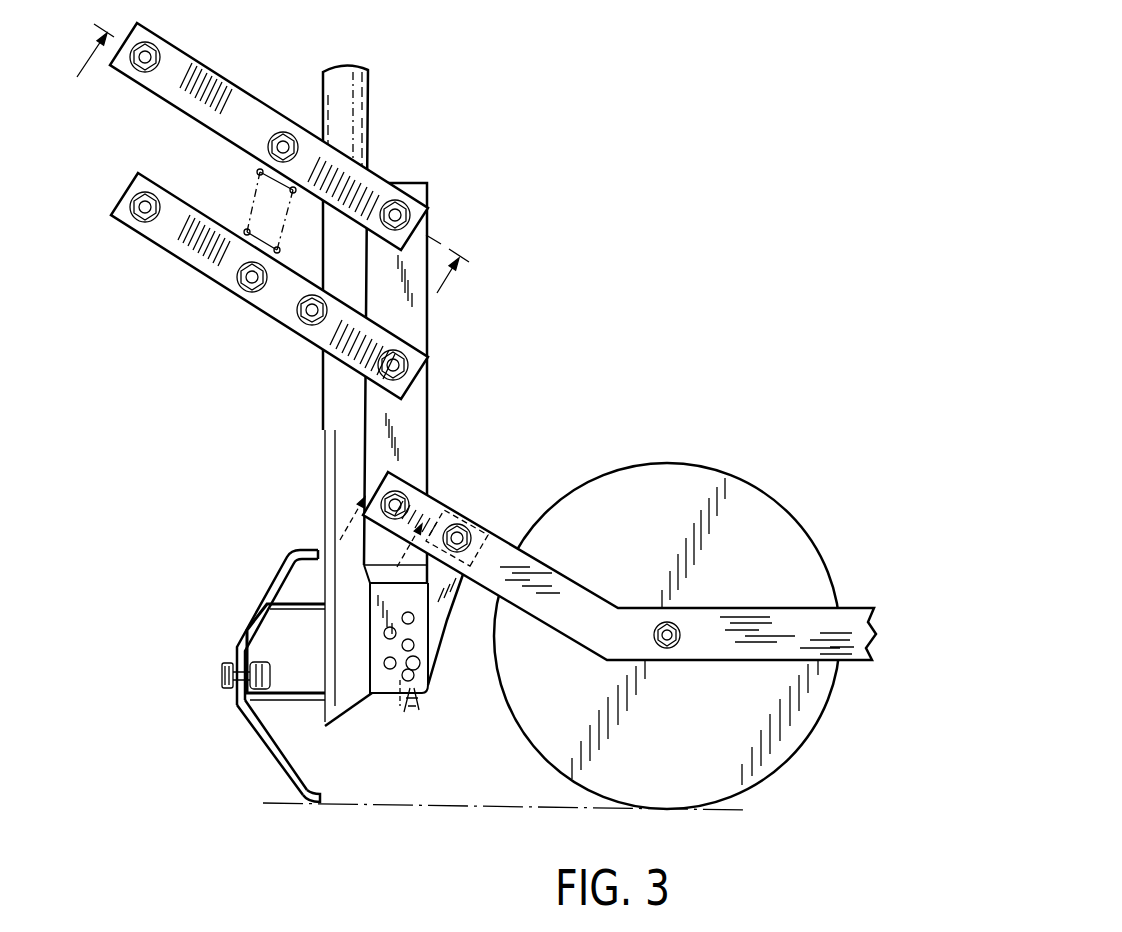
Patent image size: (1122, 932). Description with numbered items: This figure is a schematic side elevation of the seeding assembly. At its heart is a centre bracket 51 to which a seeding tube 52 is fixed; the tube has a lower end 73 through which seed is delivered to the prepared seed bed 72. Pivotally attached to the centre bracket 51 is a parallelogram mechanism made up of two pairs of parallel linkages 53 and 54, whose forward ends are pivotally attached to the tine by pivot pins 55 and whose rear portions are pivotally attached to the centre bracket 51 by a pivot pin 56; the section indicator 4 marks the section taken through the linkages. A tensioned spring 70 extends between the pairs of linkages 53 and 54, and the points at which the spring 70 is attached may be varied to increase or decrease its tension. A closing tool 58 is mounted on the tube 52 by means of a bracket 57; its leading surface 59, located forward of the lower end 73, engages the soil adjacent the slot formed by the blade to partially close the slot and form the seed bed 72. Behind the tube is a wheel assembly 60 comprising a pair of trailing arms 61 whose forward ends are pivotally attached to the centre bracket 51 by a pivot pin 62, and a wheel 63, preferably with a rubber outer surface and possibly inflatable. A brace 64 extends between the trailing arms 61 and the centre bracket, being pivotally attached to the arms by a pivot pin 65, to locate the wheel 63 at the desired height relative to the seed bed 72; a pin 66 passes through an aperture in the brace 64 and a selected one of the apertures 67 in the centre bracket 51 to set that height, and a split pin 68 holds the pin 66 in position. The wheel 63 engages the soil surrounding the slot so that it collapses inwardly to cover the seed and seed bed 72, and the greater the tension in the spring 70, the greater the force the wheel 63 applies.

The section line 4- 4 is at (267, 174).
The centre bracket 51 is at (413, 413).
The seeding tube 52 is at (360, 93).
The parallel linkage 53 is at (235, 95).
The parallel linkage 54 is at (208, 268).
The pivot pin 55 is at (143, 72).
The pivot pin 56 is at (404, 208).
The bracket 57 is at (287, 612).
The closing tool 58 is at (256, 754).
The leading surface 59 is at (292, 785).
The wheel assembly 60 is at (608, 573).
The trailing arm 61 is at (493, 548).
The pivot pin 62 is at (405, 492).
The wheel 63 is at (776, 585).
The brace 64 is at (447, 600).
The pivot pin 65 is at (470, 524).
The pin 66 is at (426, 683).
The aperture 67 is at (387, 663).
The split pin 68 is at (403, 705).
The tensioned spring 70 is at (262, 212).
The seed bed 72 is at (460, 808).
The lower end 73 is at (320, 715).